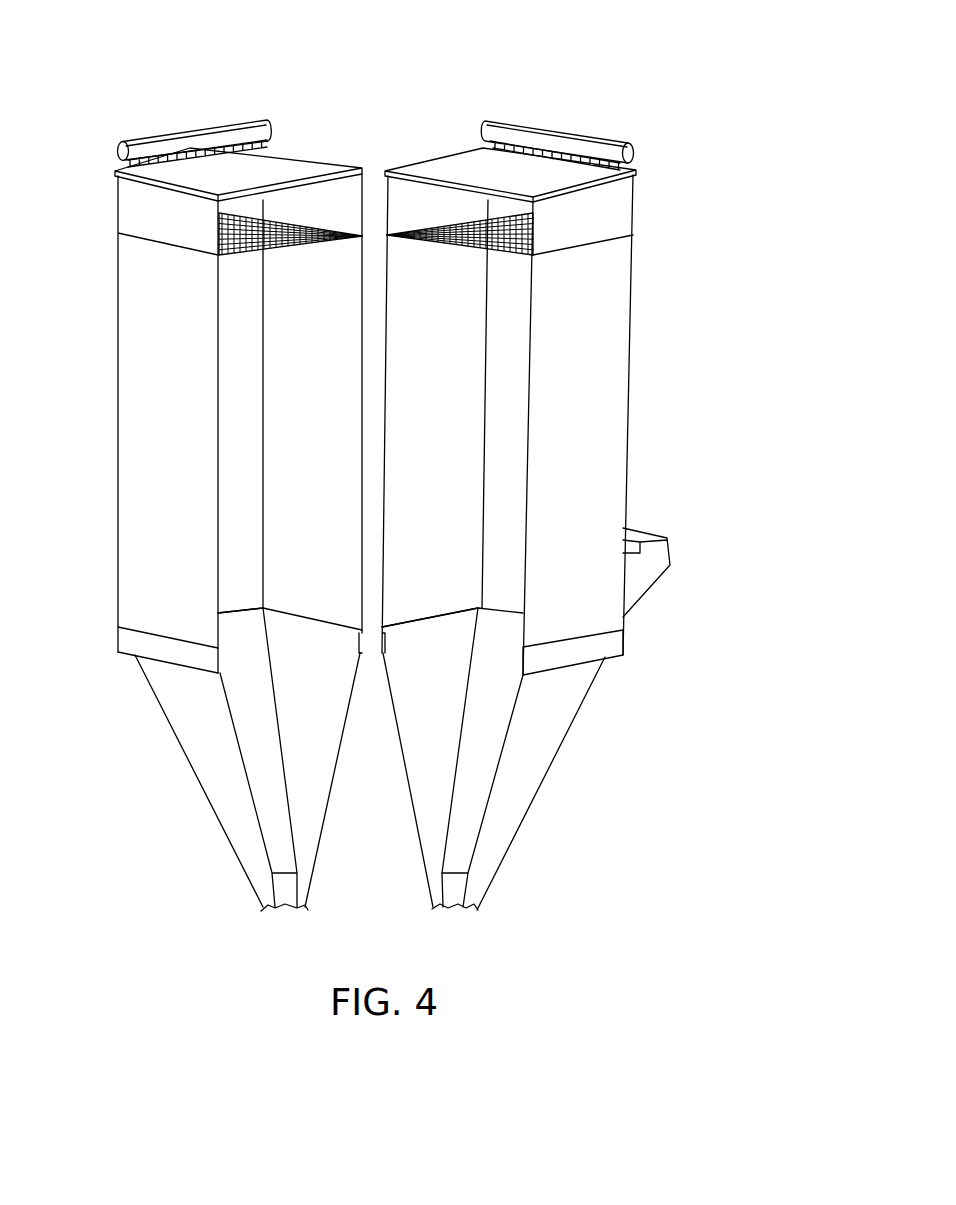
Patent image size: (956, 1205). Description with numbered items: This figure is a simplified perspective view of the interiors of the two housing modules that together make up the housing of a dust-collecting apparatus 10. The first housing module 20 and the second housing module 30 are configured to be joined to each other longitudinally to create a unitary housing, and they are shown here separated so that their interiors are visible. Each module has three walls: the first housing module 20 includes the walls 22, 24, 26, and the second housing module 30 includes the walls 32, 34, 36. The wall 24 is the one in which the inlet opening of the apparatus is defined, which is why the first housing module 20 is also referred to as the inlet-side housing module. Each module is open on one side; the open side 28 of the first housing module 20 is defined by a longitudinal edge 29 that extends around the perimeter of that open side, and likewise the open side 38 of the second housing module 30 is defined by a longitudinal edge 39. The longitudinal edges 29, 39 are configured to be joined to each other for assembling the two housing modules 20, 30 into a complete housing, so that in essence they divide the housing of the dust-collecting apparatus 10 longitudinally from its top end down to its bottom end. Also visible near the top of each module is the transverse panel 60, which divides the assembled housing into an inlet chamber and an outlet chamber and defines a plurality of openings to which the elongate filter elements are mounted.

The dust-collecting apparatus 10 is at (170, 75).
The first housing module 20 is at (588, 353).
The wall 22 is at (598, 415).
The wall 24 is at (512, 407).
The wall 26 is at (410, 592).
The open side 28 is at (458, 592).
The longitudinal edge 29 is at (523, 532).
The second housing module 30 is at (170, 463).
The wall 32 is at (152, 332).
The wall 34 is at (242, 492).
The wall 36 is at (354, 268).
The open side 38 is at (235, 592).
The longitudinal edge 39 is at (362, 548).
The transverse panel 60 is at (282, 220).